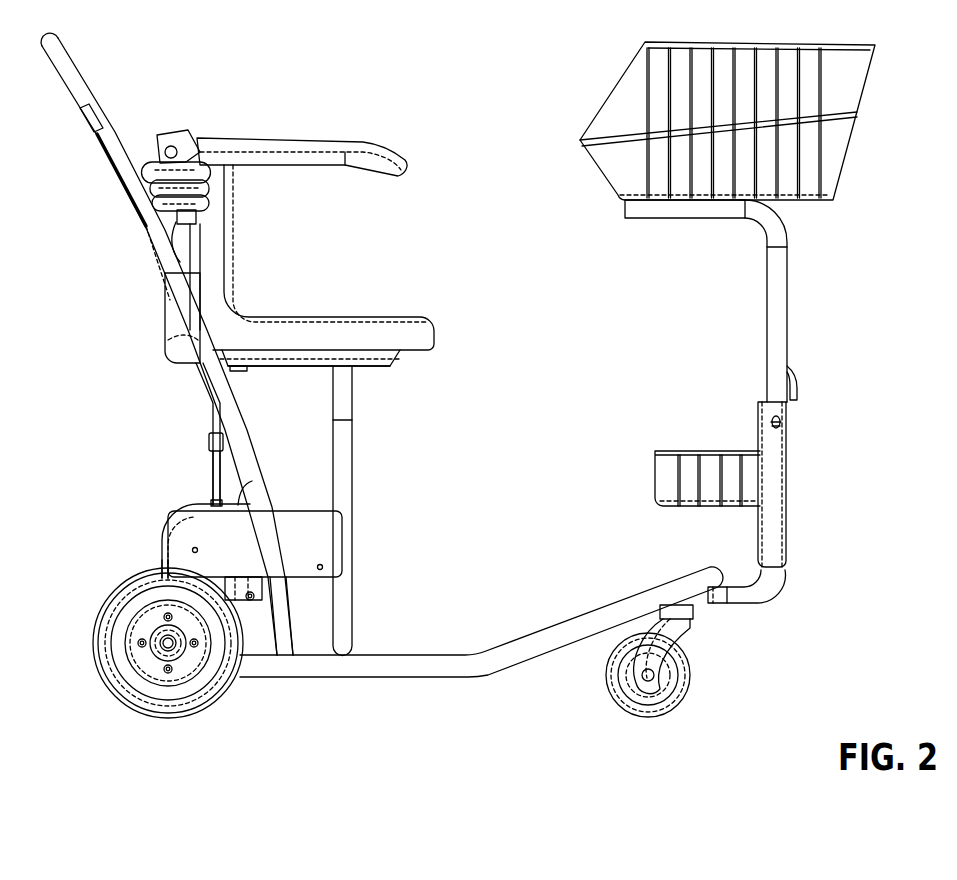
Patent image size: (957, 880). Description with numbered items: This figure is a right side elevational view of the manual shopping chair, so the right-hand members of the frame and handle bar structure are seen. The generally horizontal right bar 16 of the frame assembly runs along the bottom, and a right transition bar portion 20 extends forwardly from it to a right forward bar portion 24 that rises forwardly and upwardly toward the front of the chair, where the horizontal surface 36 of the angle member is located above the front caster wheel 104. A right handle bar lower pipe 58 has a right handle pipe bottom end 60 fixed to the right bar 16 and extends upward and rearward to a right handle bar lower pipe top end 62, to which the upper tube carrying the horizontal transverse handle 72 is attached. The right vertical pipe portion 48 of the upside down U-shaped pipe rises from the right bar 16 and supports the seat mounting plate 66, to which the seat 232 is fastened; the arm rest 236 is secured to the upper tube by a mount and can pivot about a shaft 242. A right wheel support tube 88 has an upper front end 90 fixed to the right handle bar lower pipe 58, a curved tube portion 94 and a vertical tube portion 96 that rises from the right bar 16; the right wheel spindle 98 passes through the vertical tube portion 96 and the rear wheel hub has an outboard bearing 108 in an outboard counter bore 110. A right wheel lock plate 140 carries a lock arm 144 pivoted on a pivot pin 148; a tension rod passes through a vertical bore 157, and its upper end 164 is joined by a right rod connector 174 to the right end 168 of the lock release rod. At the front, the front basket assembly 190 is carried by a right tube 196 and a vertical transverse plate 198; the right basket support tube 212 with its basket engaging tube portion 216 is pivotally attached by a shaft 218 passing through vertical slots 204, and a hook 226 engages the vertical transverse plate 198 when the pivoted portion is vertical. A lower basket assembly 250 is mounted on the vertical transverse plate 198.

The horizontal transverse handle 72 is at (62, 48).
The shaft 242 is at (172, 135).
The arm rest 236 is at (350, 138).
The seat 232 is at (370, 317).
The seat mounting plate 66 is at (376, 368).
The right vertical pipe portion 48 is at (352, 452).
The right handle bar lower pipe top end 62 is at (172, 340).
The right end of lock release rod 168 is at (213, 416).
The right rod connector 174 is at (209, 442).
The upper end of tension rod 164 is at (213, 470).
The vertical bore 157 is at (211, 504).
The curved tube portion 94 is at (176, 510).
The right wheel support tube 88 is at (163, 546).
The vertical tube portion 96 is at (162, 562).
The right wheel lock plate 140 is at (342, 556).
The lock arm 144 is at (232, 596).
The pivot pin 148 is at (251, 592).
The upper front end 90 is at (252, 481).
The right wheel spindle 98 is at (168, 650).
The outboard counter bore 110 is at (152, 638).
The outboard bearing 108 is at (176, 650).
The right bar 16 is at (352, 677).
The right transition bar portion 20 is at (462, 677).
The right forward bar portion 24 is at (640, 598).
The right handle pipe bottom end 60 is at (284, 658).
The right handle bar lower pipe 58 is at (288, 612).
The front basket assembly 190 is at (596, 78).
The basket engaging tube portion 216 is at (655, 218).
The right basket support tube 212 is at (766, 300).
The hook 226 is at (797, 384).
The vertical transverse plate 198 is at (787, 492).
The shaft 218 is at (780, 421).
The vertical slots 204 is at (781, 428).
The lower basket assembly 250 is at (690, 451).
The right tube 196 is at (768, 594).
The horizontal surface 36 is at (713, 604).
The caster wheel 104 is at (691, 678).